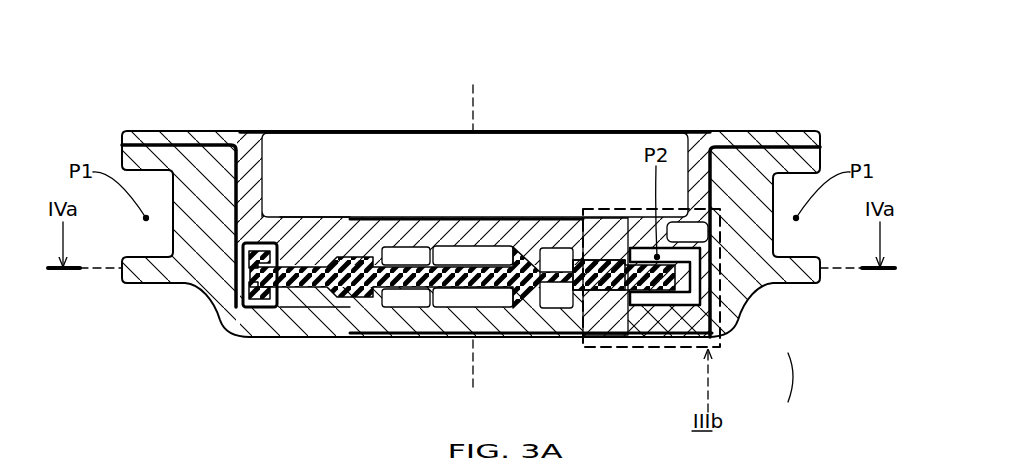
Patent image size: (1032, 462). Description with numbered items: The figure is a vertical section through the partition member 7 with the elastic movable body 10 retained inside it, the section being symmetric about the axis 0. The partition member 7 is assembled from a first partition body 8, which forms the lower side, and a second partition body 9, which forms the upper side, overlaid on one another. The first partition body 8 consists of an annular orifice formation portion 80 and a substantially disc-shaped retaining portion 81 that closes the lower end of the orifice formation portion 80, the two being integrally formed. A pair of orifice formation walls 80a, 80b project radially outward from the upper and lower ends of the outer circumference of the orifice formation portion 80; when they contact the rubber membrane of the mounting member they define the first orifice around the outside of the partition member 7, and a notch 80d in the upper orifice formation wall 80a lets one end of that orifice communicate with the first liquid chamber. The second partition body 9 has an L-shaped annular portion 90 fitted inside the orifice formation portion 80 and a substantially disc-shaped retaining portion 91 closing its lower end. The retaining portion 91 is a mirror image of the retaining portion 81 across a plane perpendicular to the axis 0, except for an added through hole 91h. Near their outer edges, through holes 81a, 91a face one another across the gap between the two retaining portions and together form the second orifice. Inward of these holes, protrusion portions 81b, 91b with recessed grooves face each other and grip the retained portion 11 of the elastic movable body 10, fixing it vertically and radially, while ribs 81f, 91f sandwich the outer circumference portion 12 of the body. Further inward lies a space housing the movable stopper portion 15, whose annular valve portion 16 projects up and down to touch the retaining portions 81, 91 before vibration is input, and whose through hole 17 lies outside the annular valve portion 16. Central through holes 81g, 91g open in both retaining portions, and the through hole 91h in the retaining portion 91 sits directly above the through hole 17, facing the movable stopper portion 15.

The axis 0 is at (473, 90).
The partition member 7 is at (790, 62).
The first partition body 8 is at (800, 377).
The second partition body 9 is at (730, 40).
The elastic movable body 10 is at (425, 295).
The retained portion 11 is at (598, 300).
The outer circumference portion 12 is at (265, 300).
The movable stopper portion 15 is at (478, 262).
The annular valve portion 16 is at (405, 257).
The through hole 17 is at (552, 305).
The orifice formation portion 80 is at (200, 225).
The orifice formation wall 80a is at (815, 158).
The orifice formation wall 80b is at (815, 290).
The notch 80d is at (788, 163).
The retaining portion 81 is at (720, 358).
The through hole 81a is at (640, 340).
The protrusion portion 81b is at (585, 325).
The rib 81f is at (300, 320).
The through hole 81g is at (470, 332).
The annular portion 90 is at (703, 131).
The retaining portion 91 is at (638, 100).
The through hole 91a is at (620, 131).
The protrusion portion 91b is at (600, 235).
The rib 91f is at (300, 240).
The through hole 91g is at (462, 240).
The through hole 91h is at (552, 240).